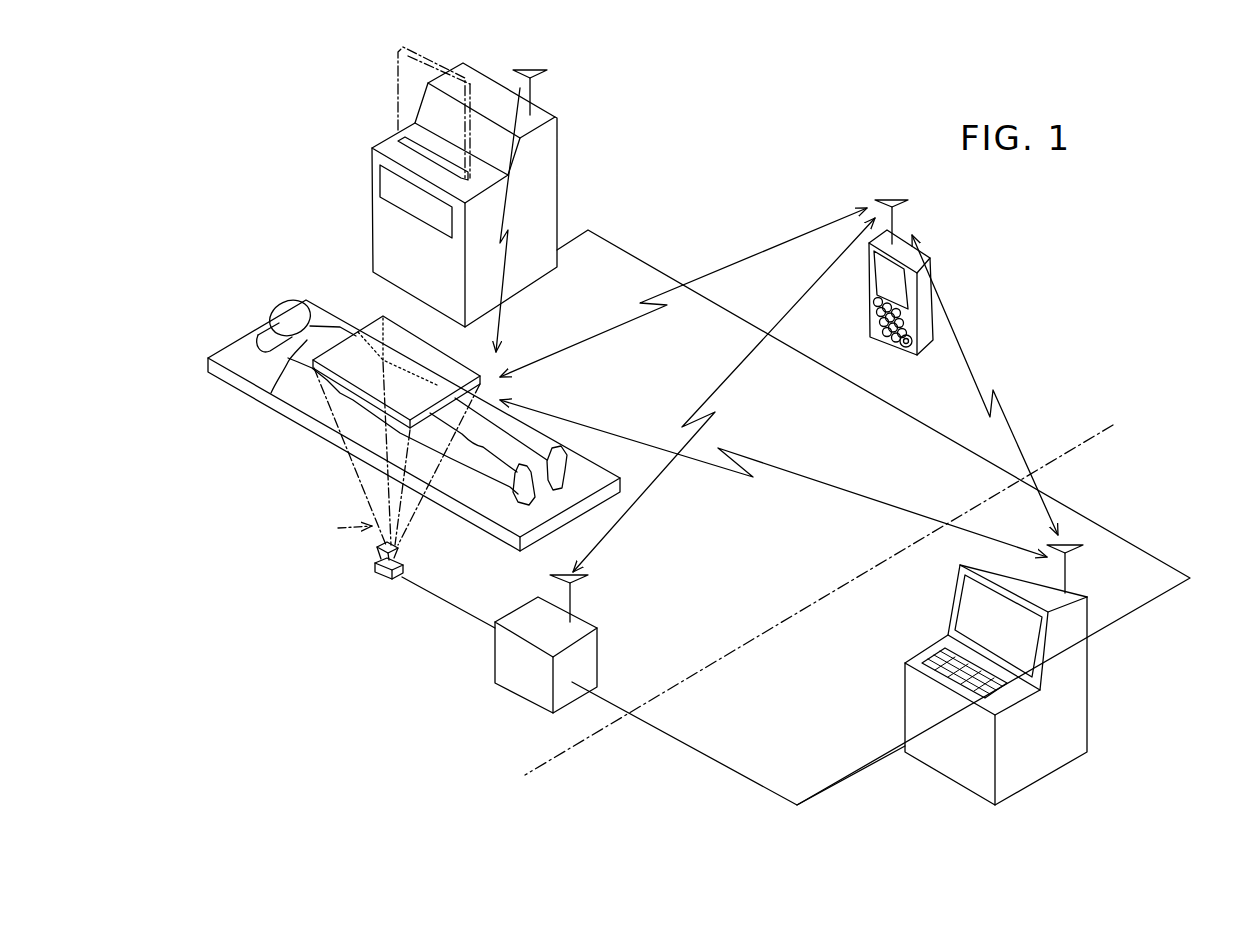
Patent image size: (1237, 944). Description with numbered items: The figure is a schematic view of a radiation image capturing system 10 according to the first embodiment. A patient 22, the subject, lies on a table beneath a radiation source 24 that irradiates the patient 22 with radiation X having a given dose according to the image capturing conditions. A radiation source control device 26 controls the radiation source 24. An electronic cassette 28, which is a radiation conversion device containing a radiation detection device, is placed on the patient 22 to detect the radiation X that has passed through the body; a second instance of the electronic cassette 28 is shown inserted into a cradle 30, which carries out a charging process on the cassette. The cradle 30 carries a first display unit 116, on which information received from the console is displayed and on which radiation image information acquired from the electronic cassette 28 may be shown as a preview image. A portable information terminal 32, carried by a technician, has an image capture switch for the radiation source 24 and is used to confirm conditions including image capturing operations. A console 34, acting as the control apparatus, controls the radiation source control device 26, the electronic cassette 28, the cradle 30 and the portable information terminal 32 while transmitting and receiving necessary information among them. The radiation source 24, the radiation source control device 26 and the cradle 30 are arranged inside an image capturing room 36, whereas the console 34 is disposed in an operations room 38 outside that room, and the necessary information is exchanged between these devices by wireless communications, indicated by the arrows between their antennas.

The radiation image capturing system 10 is at (661, 116).
The patient 22 is at (271, 394).
The radiation source 24 is at (375, 568).
The radiation source control device 26 is at (522, 683).
The electronic cassette 28 is at (407, 100).
The cradle 30 is at (460, 195).
The first display unit 116 is at (388, 186).
The portable information terminal 32 is at (876, 316).
The console 34 is at (1078, 685).
The image capturing room 36 is at (463, 722).
The operations room 38 is at (1165, 522).